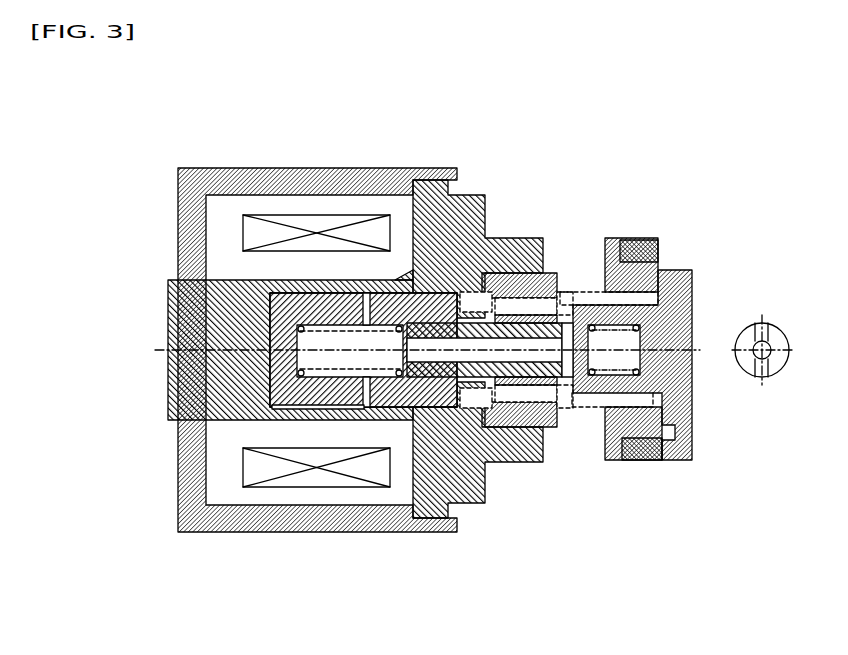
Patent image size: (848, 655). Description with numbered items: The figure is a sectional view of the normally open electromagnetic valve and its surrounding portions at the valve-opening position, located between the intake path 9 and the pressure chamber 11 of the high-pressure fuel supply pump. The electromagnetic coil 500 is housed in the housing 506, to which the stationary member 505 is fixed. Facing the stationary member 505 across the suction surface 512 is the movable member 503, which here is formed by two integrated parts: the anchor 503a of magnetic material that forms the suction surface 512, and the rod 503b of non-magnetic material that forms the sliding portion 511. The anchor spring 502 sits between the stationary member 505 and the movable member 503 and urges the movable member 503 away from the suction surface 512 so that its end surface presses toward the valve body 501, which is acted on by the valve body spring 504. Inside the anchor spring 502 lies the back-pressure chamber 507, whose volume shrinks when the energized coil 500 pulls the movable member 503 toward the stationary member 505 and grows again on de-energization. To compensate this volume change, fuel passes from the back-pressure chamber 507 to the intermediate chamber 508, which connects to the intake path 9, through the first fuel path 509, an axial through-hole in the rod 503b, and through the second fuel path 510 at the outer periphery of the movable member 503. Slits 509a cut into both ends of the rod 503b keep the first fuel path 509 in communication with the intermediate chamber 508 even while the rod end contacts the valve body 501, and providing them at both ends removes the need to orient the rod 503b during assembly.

The intake path 9 is at (576, 300).
The pressure chamber 11 is at (573, 297).
The electromagnetic coil 500 is at (260, 467).
The valve body 501 is at (670, 410).
The anchor spring 502 is at (352, 303).
The movable member 503 is at (613, 107).
The anchor 503a is at (397, 305).
The rod 503b is at (495, 295).
The valve body spring 504 is at (622, 305).
The stationary member 505 is at (291, 305).
The housing 506 is at (215, 323).
The back-pressure chamber 507 is at (303, 411).
The intermediate chamber 508 is at (590, 403).
The first fuel path 509 is at (492, 380).
The slit 509a is at (580, 297).
The second fuel path 510 is at (448, 410).
The sliding portion 511 is at (527, 402).
The suction surface 512 is at (367, 410).